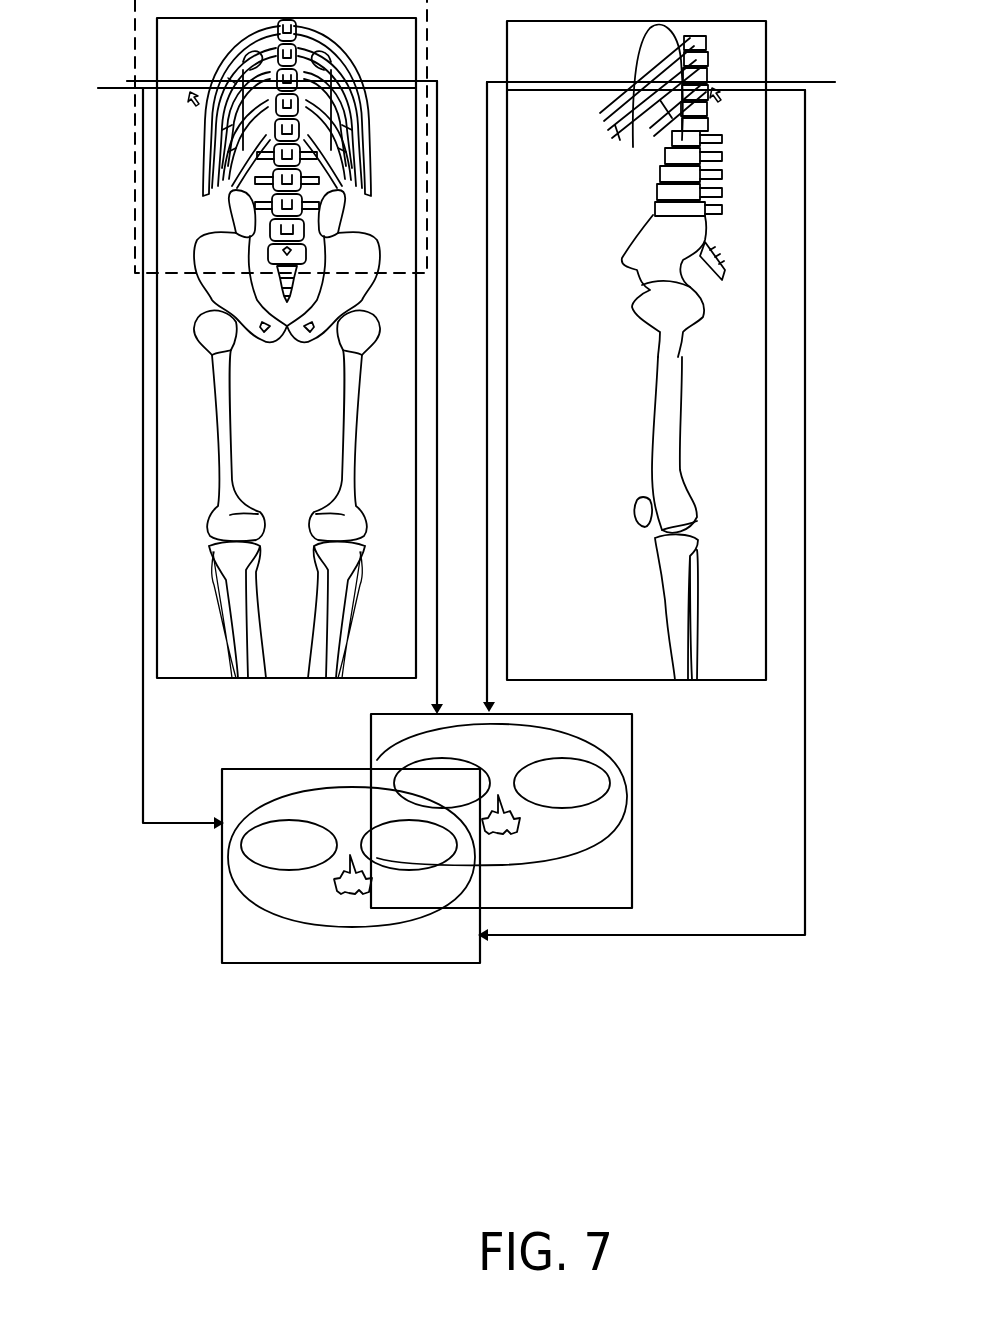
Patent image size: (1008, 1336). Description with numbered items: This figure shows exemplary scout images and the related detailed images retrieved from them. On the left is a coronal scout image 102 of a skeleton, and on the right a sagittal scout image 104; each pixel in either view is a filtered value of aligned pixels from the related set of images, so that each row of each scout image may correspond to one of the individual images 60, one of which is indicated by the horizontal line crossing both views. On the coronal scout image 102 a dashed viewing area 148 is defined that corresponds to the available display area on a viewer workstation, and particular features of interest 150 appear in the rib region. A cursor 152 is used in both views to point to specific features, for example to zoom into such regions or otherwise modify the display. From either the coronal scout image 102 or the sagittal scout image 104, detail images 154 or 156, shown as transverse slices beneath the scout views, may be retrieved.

The individual images 60 is at (467, 86).
The coronal scout image 102 is at (157, 454).
The sagittal scout image 104 is at (768, 333).
The viewing area 148 is at (133, 227).
The features of interest 150 is at (228, 79).
The cursor 152 is at (188, 97).
The detail image 154 is at (631, 716).
The detail image 156 is at (222, 904).